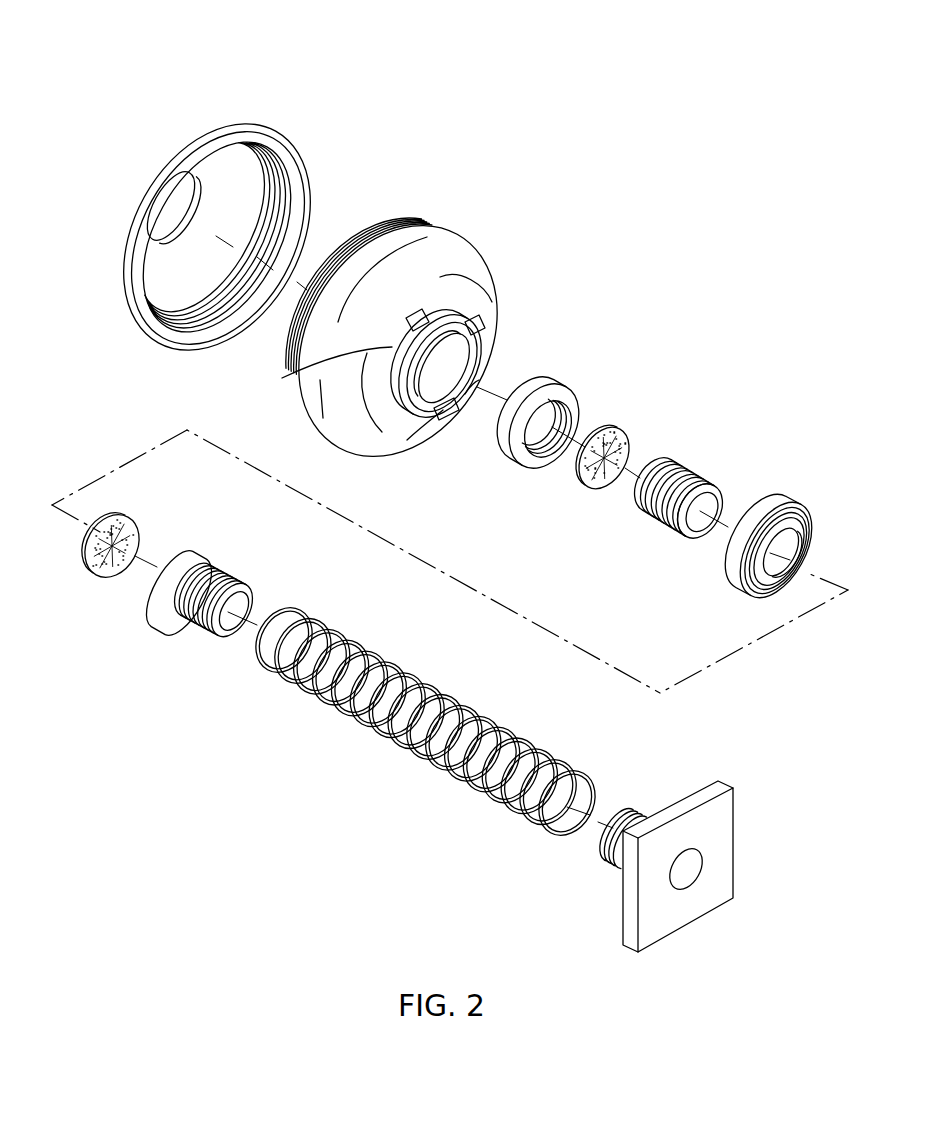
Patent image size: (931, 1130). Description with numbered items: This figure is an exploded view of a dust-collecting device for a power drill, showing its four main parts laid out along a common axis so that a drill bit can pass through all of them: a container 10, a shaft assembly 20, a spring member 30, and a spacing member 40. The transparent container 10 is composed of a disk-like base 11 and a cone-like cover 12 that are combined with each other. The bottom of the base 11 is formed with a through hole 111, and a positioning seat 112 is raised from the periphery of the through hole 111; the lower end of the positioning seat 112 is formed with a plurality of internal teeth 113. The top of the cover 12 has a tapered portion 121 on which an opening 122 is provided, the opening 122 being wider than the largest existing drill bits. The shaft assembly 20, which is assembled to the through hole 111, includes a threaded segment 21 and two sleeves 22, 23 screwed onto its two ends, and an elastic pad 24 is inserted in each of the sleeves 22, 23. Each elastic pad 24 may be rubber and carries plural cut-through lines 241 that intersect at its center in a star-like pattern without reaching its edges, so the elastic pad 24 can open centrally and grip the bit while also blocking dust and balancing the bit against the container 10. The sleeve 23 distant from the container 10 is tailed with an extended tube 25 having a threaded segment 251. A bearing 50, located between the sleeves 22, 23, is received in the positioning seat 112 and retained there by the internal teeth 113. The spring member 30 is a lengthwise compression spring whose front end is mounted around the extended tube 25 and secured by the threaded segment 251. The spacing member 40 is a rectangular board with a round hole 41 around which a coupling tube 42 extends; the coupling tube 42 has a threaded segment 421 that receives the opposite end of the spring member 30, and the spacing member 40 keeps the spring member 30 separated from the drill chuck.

The container 10 is at (370, 100).
The base 11 is at (404, 332).
The through hole 111 is at (284, 377).
The positioning seat 112 is at (479, 380).
The internal teeth 113 is at (470, 318).
The cover 12 is at (192, 217).
The tapered portion 121 is at (153, 177).
The opening 122 is at (165, 216).
The shaft assembly 20 is at (678, 405).
The threaded segment 21 is at (692, 470).
The sleeve 22 is at (516, 447).
The sleeve 23 is at (222, 564).
The elastic pad 24 is at (357, 507).
The cut-through lines 241 is at (603, 485).
The extended tube 25 is at (195, 656).
The threaded segment 251 is at (233, 578).
The spring member 30 is at (392, 657).
The spacing member 40 is at (710, 877).
The round hole 41 is at (683, 880).
The coupling tube 42 is at (596, 809).
The threaded segment 421 is at (608, 853).
The bearing 50 is at (768, 504).